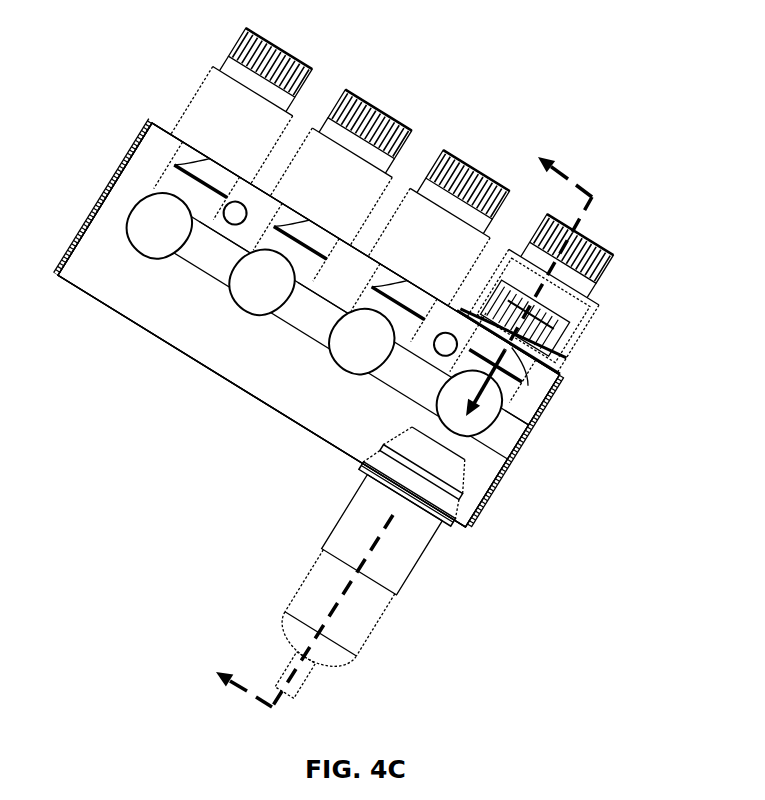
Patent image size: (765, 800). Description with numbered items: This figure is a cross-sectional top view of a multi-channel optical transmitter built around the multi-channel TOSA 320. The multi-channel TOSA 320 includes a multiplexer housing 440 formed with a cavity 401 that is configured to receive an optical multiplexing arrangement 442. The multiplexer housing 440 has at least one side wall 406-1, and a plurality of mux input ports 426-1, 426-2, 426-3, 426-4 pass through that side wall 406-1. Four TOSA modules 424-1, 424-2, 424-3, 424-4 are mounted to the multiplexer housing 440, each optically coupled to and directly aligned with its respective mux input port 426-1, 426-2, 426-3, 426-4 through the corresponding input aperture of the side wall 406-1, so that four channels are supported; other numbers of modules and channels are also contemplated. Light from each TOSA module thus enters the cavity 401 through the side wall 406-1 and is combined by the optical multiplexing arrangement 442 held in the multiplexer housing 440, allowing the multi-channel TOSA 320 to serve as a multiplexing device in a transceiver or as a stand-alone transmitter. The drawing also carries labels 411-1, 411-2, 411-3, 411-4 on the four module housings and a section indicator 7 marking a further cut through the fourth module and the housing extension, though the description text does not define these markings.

The multi-channel TOSA 320 is at (121, 93).
The cavity 401 is at (222, 261).
The side wall 406-1 is at (164, 120).
The optical multiplexing arrangement 442 is at (112, 275).
The first valve 411-1 is at (257, 126).
The second valve 411-2 is at (352, 191).
The third valve 411-3 is at (454, 254).
The fourth valve 411-4 is at (582, 320).
The TOSA module 424-1 is at (298, 36).
The TOSA module 424-2 is at (390, 97).
The TOSA module 424-3 is at (485, 152).
The TOSA module 424-4 is at (608, 228).
The mux input port 426-1 is at (177, 167).
The mux input port 426-2 is at (204, 220).
The mux input port 426-3 is at (303, 278).
The mux input port 426-4 is at (507, 406).
The multiplexer housing 440 is at (467, 525).
The section line 7- 7 is at (418, 445).